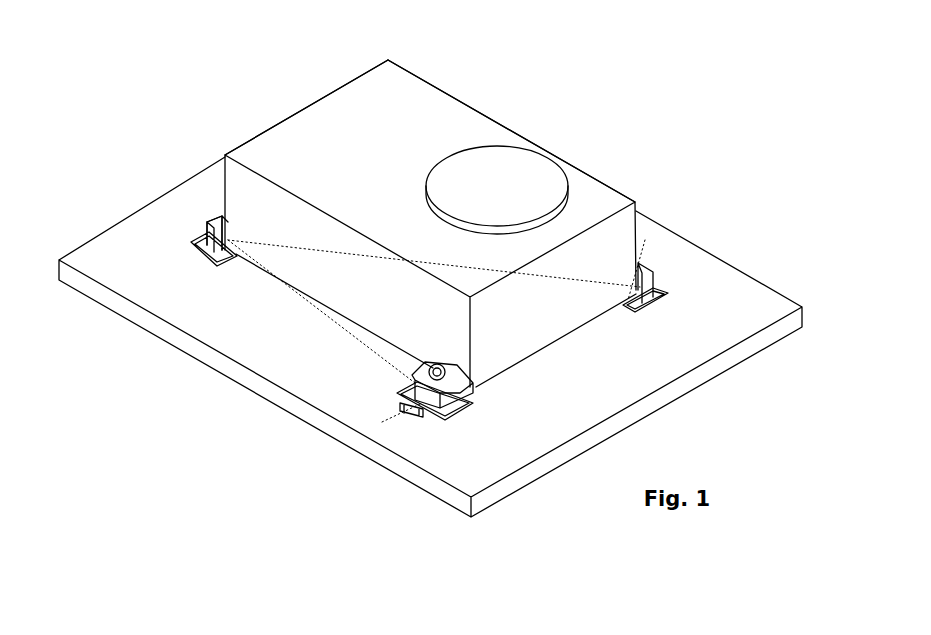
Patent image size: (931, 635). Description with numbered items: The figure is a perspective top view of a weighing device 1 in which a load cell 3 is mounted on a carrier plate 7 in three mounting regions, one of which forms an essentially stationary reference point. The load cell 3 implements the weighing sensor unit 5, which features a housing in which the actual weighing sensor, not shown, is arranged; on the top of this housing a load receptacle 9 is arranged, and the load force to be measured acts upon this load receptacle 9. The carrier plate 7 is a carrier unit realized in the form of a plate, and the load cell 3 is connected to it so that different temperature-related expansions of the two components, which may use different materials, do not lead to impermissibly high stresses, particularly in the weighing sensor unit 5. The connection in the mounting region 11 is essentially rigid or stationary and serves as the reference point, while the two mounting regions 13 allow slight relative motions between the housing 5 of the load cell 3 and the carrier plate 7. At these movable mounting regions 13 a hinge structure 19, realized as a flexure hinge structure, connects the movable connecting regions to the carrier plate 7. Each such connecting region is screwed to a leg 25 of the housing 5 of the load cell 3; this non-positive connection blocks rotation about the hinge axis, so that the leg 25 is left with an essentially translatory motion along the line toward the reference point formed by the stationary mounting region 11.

The weighing device 1 is at (650, 114).
The load cell 3 is at (468, 100).
The weighing sensor unit 5 is at (377, 84).
The carrier plate 7 is at (147, 235).
The load receptacle 9 is at (452, 177).
The mounting region 11 is at (205, 258).
The mounting regions 13 is at (656, 305).
The hinge structure 19 is at (422, 420).
The leg 25 is at (213, 215).